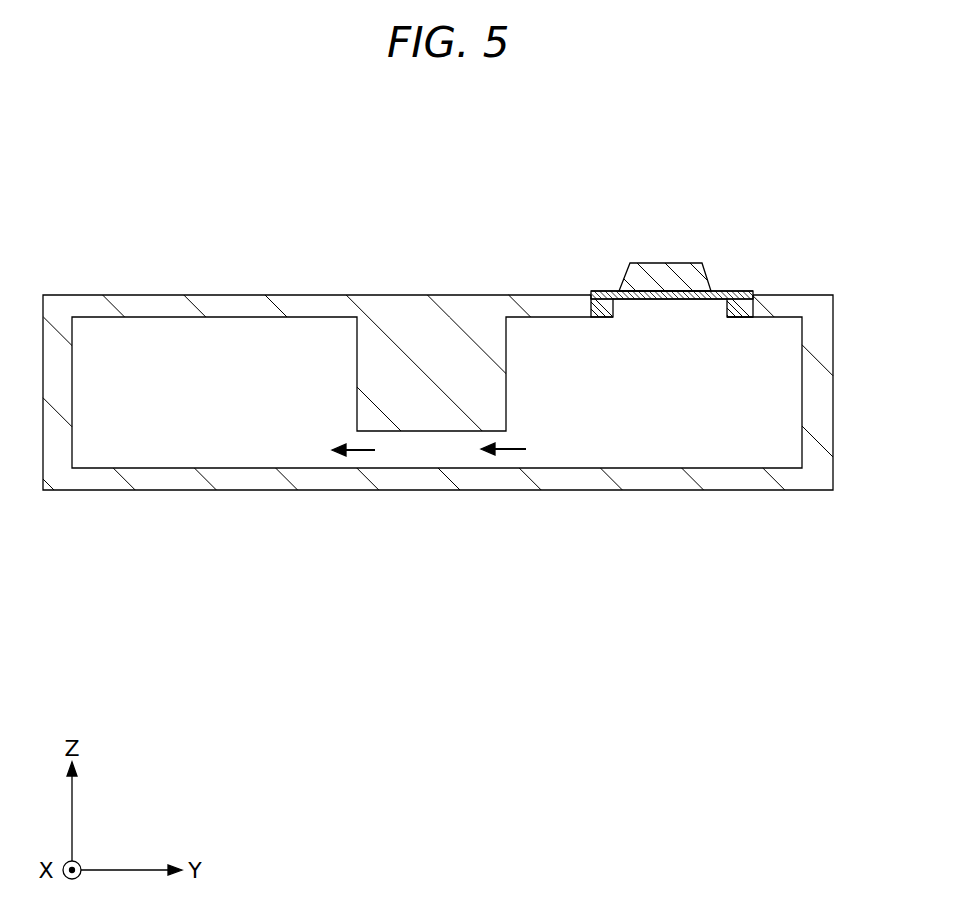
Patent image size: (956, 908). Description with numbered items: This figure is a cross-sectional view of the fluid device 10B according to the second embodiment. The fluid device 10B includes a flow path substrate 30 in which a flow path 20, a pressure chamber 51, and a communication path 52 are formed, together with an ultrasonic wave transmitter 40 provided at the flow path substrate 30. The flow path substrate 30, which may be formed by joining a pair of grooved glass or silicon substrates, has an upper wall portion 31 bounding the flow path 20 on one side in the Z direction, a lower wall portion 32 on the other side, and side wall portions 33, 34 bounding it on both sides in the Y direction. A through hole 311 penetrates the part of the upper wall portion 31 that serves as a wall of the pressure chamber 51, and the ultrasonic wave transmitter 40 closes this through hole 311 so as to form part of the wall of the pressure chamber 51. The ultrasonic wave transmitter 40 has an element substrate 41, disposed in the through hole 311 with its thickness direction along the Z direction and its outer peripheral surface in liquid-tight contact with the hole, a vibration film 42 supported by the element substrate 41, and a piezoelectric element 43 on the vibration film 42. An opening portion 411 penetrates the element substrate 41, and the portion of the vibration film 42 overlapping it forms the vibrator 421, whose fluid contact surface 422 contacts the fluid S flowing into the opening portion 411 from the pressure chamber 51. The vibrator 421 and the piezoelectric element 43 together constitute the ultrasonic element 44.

The fluid device 10B is at (62, 158).
The flow path 20 is at (233, 467).
The flow path substrate 30 is at (386, 297).
The upper wall portion 31 is at (165, 307).
The through hole 311 is at (602, 292).
The lower wall portion 32 is at (582, 482).
The side wall portion 33 is at (58, 433).
The side wall portion 34 is at (835, 428).
The ultrasonic wave transmitter 40 is at (604, 208).
The element substrate 41 is at (750, 291).
The opening portion 411 is at (717, 318).
The vibration film 42 is at (732, 291).
The vibrator 421 is at (713, 291).
The fluid contact surface 422 is at (645, 300).
The piezoelectric element 43 is at (676, 270).
The ultrasonic element 44 is at (655, 200).
The pressure chamber 51 is at (800, 410).
The communication path 52 is at (428, 468).
The fluid S is at (293, 329).